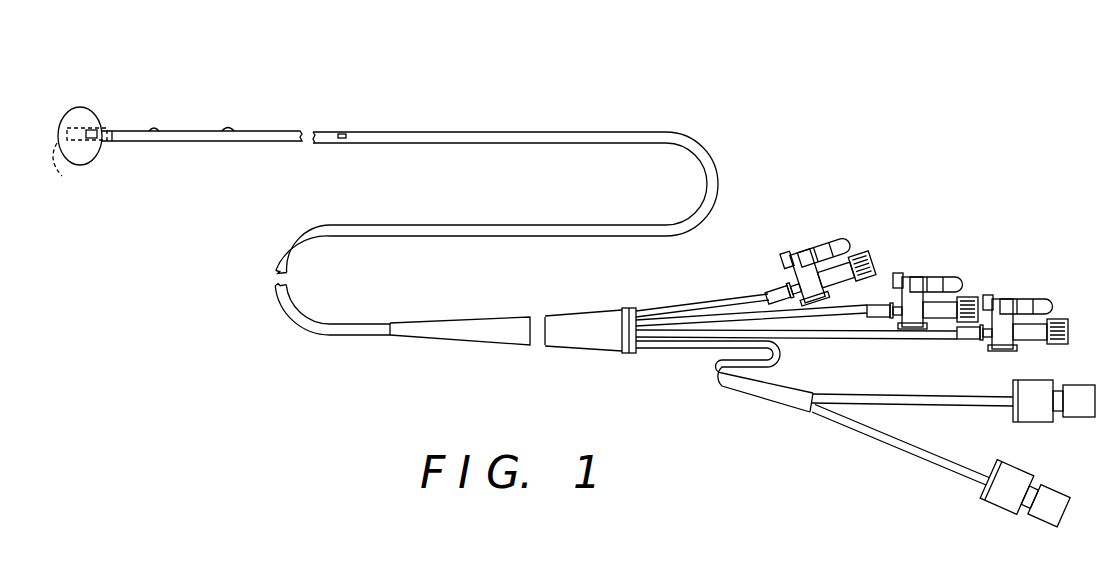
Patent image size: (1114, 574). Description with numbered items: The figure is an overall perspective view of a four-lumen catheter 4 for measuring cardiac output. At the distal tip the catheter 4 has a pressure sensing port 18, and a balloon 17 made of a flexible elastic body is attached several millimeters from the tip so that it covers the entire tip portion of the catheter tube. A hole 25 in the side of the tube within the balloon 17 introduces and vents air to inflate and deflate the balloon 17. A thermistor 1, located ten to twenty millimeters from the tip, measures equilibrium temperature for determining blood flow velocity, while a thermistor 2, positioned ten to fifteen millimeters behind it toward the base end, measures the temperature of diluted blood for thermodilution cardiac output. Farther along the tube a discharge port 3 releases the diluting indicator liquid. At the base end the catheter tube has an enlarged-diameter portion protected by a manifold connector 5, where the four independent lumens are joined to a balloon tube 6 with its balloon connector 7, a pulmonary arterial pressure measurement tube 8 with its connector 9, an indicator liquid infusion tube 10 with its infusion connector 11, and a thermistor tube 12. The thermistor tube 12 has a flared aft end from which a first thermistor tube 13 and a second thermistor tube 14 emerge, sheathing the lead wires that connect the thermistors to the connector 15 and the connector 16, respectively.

The thermistor 1 is at (155, 130).
The thermistor 2 is at (231, 128).
The discharge port 3 is at (343, 143).
The catheter 4 is at (452, 131).
The manifold connector 5 is at (588, 312).
The balloon tube 6 is at (698, 300).
The balloon connector 7 is at (795, 251).
The pulmonary arterial pressure measurement tube 8 is at (749, 302).
The connector 9 is at (913, 275).
The indicator liquid infusion tube 10 is at (853, 339).
The infusion connector 11 is at (1008, 297).
The thermistor tube 12 is at (772, 405).
The first thermistor tube 13 is at (933, 393).
The second thermistor tube 14 is at (895, 447).
The connector 15 is at (1022, 420).
The connector 16 is at (993, 505).
The balloon 17 is at (98, 156).
The pressure sensing port 18 is at (66, 170).
The hole 25 is at (98, 106).